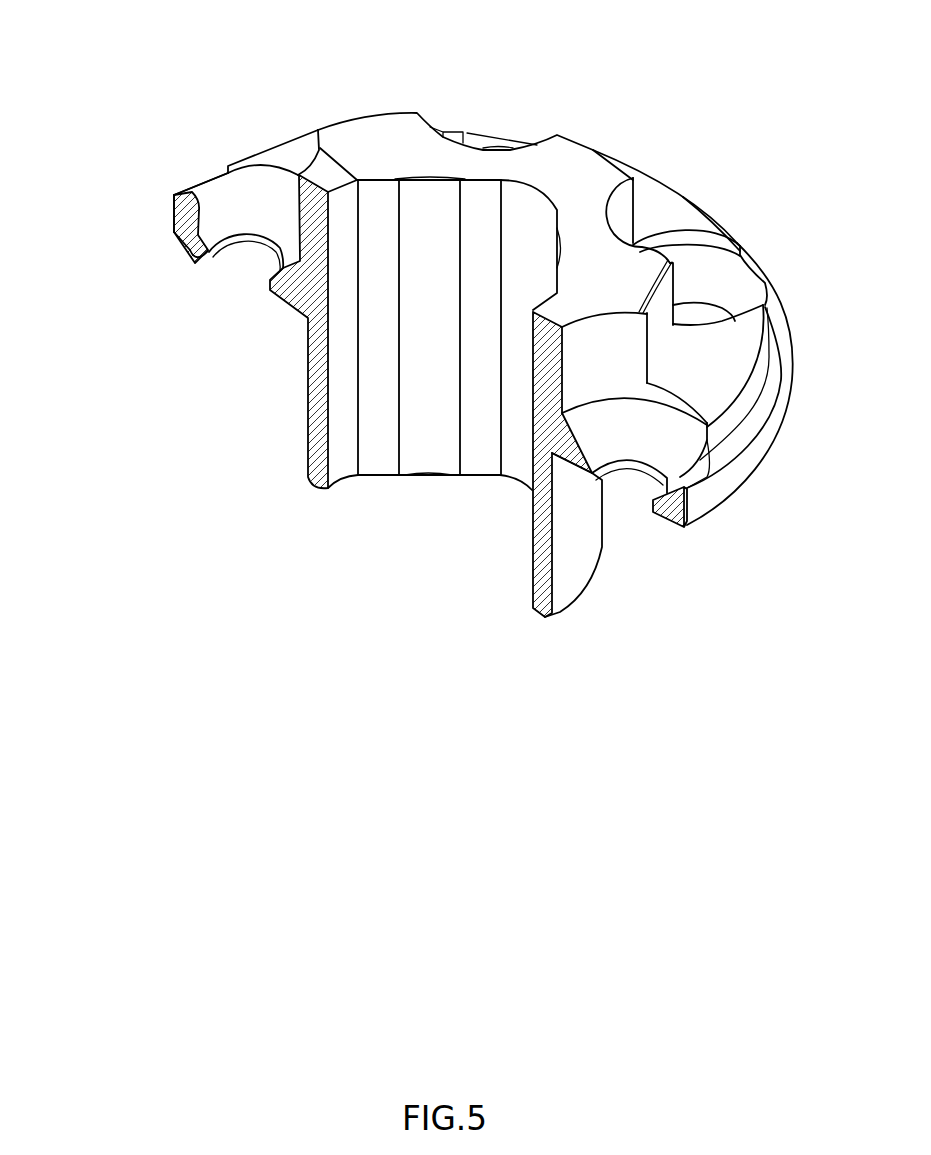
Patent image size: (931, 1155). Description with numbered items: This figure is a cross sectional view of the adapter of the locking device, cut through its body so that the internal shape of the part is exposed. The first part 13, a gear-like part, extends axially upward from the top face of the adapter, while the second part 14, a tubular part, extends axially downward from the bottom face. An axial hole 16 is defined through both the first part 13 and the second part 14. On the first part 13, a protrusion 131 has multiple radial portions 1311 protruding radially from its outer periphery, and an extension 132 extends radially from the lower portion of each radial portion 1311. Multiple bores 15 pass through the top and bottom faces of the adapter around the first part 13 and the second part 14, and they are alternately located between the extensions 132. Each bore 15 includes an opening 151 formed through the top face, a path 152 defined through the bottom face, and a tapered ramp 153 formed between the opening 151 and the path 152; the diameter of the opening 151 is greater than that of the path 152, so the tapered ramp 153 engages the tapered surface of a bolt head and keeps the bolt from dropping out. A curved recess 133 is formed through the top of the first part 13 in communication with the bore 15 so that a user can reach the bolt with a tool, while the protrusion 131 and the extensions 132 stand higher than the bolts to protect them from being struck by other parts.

The first part 13 is at (808, 92).
The protrusion 131 is at (503, 163).
The radial portion 1311 is at (590, 163).
The extension 132 is at (683, 198).
The curved recess 133 is at (627, 358).
The second part 14 is at (580, 565).
The bore 15 is at (88, 112).
The opening 151 is at (207, 188).
The path 152 is at (213, 255).
The tapered ramp 153 is at (197, 217).
The axial hole 16 is at (383, 217).